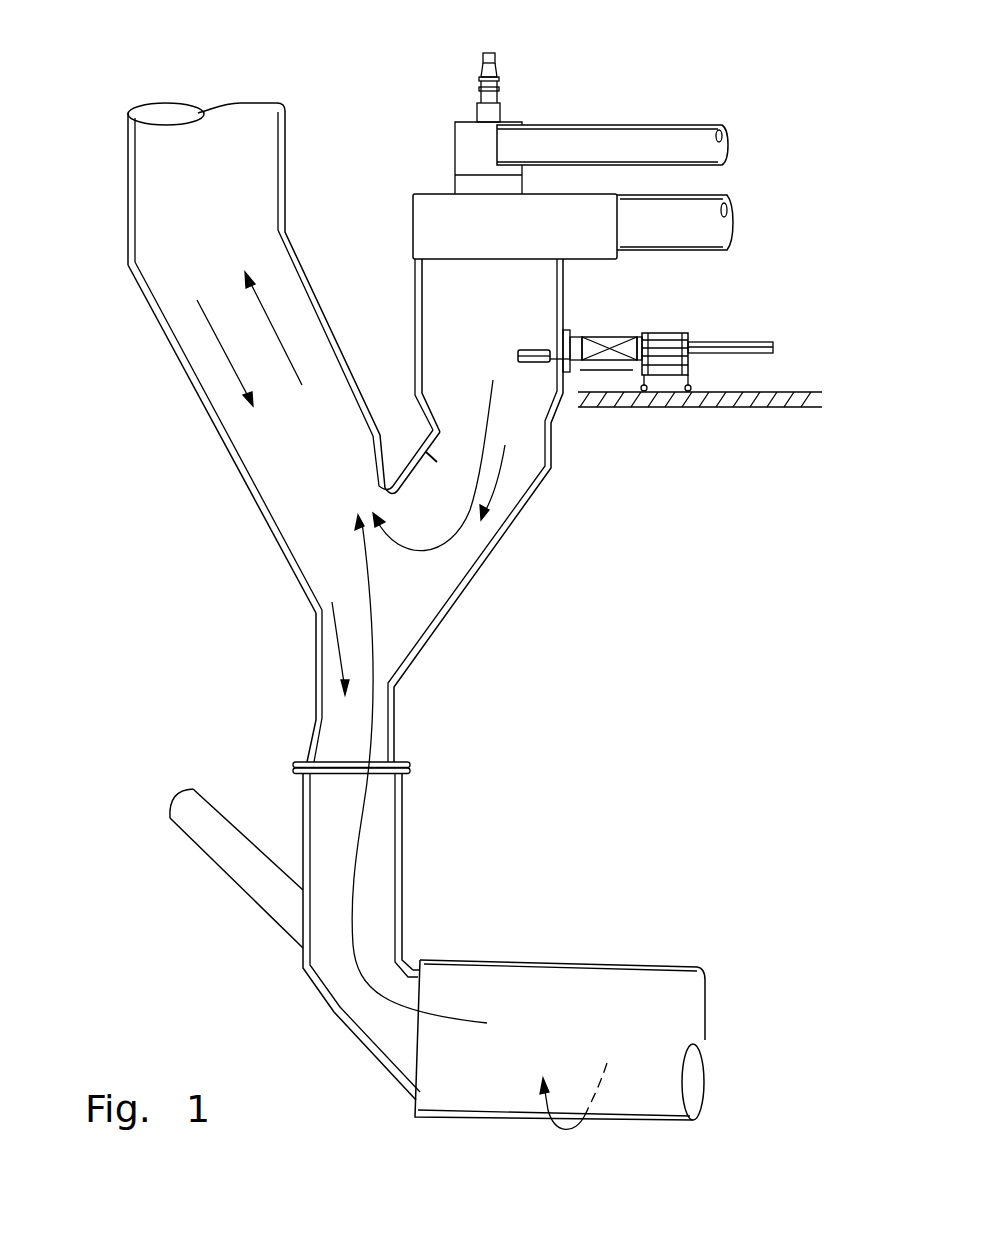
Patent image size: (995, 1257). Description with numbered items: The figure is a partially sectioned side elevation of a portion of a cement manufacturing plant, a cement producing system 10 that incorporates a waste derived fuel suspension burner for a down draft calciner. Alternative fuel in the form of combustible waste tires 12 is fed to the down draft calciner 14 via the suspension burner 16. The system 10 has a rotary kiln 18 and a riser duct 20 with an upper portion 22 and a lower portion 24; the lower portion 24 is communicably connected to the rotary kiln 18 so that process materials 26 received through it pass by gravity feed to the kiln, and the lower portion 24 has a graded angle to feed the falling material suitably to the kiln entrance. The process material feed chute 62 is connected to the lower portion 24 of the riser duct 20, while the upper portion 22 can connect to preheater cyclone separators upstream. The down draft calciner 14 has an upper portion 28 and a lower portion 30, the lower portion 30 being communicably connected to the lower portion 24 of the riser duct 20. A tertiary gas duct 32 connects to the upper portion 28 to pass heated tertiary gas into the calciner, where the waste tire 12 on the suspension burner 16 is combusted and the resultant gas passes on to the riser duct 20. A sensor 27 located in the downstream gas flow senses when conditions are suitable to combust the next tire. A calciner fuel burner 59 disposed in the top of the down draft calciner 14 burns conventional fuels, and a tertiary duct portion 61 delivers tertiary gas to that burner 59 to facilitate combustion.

The cement producing system 10 is at (676, 634).
The combustible waste tires 12 is at (518, 355).
The down draft calciner 14 is at (414, 280).
The suspension burner 16 is at (618, 337).
The rotary kiln 18 is at (473, 958).
The riser duct 20 is at (147, 302).
The upper portion of riser duct 22 is at (128, 167).
The lower portion of riser duct 24 is at (404, 873).
The process materials 26 is at (340, 637).
The sensor 27 is at (419, 453).
The upper portion of down draft calciner 28 is at (413, 207).
The lower portion of down draft calciner 30 is at (466, 590).
The tertiary gas duct 32 is at (707, 197).
The calciner fuel burner 59 is at (492, 58).
The tertiary duct portion 61 is at (676, 124).
The process material feed chute 62 is at (208, 858).